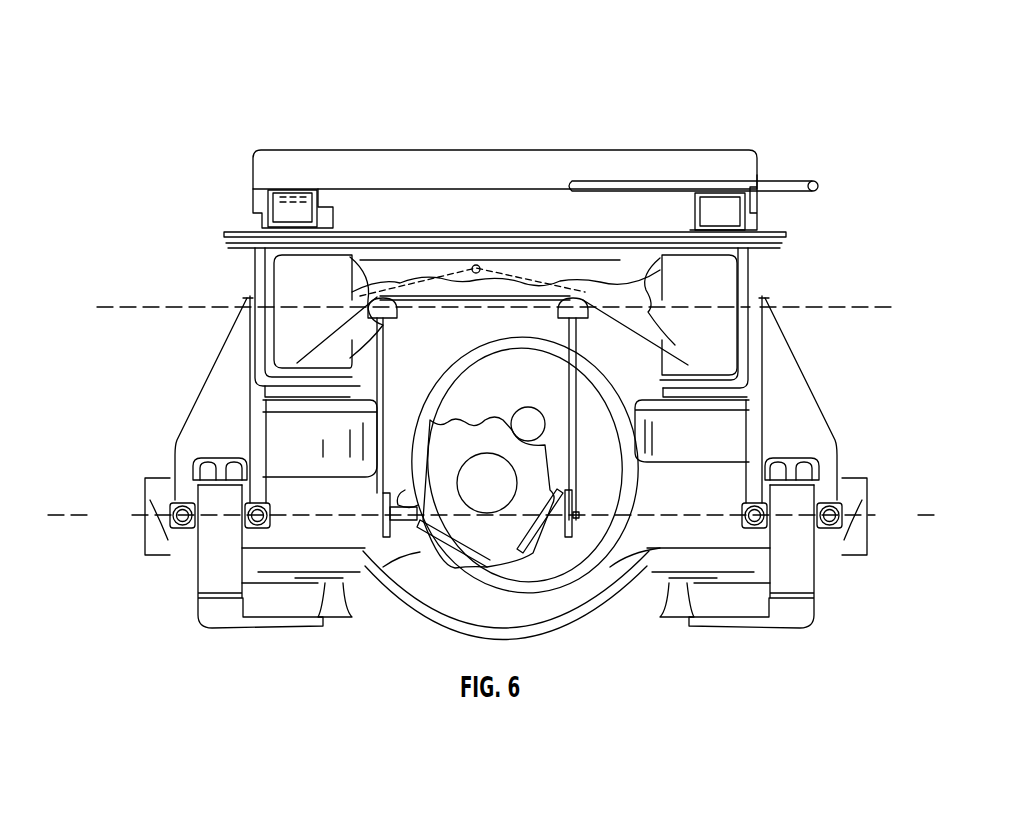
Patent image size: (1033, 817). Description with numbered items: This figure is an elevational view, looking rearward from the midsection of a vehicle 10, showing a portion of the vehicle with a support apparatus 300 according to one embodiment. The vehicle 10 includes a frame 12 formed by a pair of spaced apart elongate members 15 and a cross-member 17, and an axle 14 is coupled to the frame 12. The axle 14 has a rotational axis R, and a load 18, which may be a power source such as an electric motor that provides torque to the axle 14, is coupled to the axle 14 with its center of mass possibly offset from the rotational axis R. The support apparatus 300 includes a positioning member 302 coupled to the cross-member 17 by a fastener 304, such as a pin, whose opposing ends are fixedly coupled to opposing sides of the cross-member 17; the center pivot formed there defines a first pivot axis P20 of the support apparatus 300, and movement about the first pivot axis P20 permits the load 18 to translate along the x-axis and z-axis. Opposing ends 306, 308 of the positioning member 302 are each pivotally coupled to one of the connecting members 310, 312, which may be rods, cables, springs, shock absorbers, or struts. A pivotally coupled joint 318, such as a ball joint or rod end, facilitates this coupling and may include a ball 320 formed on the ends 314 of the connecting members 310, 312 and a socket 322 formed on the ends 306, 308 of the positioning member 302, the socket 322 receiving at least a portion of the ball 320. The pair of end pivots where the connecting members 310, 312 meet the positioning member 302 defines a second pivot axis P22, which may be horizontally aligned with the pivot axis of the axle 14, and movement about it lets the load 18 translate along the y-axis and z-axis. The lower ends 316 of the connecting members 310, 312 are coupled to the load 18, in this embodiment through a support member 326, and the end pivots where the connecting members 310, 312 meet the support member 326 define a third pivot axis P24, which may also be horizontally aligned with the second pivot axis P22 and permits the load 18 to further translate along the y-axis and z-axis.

The vehicle 10 is at (238, 93).
The frame 12 is at (756, 293).
The axle 14 is at (687, 530).
The elongate members 15 is at (750, 270).
The cross-member 17 is at (637, 268).
The load 18 is at (430, 482).
The support apparatus 300 is at (428, 262).
The positioning member 302 is at (557, 273).
The fastener 304 is at (476, 264).
The end of positioning member 306 is at (378, 298).
The end of positioning member 308 is at (574, 277).
The connecting member 310 is at (383, 363).
The connecting member 312 is at (558, 324).
The ends of connecting members 314 is at (382, 318).
The ends of connecting members 316 is at (377, 507).
The pivotally coupled joint 318 is at (369, 309).
The ball 320 is at (390, 315).
The socket 322 is at (368, 300).
The support member 326 is at (452, 547).
The first pivot axis P20 is at (505, 270).
The second pivot axis P22 is at (495, 308).
The third pivot axis P24 is at (491, 516).
The rotational axis R is at (489, 516).